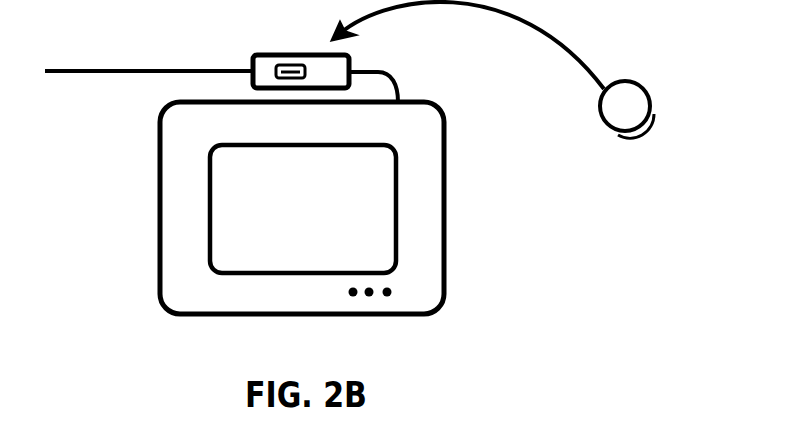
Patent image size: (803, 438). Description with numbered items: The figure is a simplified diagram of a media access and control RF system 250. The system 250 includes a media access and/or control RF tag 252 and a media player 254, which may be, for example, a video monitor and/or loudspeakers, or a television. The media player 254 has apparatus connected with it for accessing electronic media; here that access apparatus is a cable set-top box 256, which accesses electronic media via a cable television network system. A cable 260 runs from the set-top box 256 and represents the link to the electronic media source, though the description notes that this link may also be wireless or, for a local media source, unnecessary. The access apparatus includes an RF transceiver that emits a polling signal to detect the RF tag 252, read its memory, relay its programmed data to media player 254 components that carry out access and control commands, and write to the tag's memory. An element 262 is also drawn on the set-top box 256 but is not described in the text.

The media access and control RF system 250 is at (580, 249).
The media access and/or control RF tag 252 is at (630, 100).
The media player 254 is at (444, 214).
The cable set-top box 256 is at (352, 62).
The cable 260 is at (148, 69).
The indicator 262 is at (283, 66).